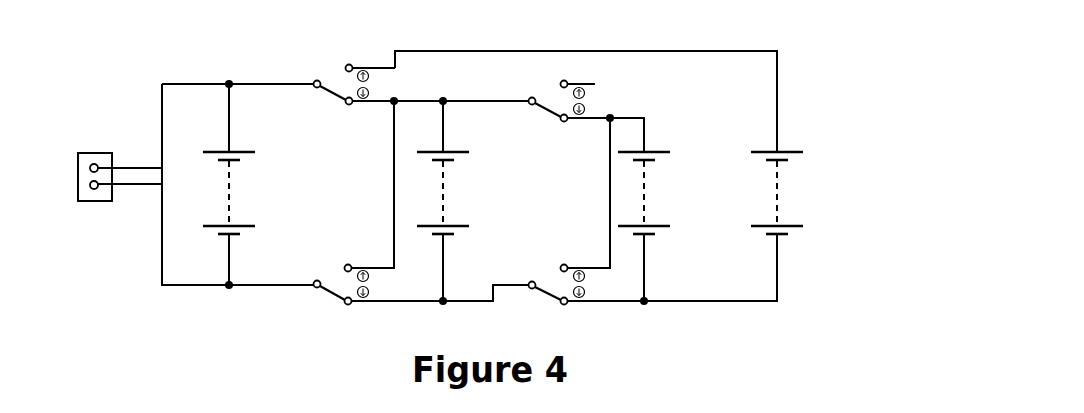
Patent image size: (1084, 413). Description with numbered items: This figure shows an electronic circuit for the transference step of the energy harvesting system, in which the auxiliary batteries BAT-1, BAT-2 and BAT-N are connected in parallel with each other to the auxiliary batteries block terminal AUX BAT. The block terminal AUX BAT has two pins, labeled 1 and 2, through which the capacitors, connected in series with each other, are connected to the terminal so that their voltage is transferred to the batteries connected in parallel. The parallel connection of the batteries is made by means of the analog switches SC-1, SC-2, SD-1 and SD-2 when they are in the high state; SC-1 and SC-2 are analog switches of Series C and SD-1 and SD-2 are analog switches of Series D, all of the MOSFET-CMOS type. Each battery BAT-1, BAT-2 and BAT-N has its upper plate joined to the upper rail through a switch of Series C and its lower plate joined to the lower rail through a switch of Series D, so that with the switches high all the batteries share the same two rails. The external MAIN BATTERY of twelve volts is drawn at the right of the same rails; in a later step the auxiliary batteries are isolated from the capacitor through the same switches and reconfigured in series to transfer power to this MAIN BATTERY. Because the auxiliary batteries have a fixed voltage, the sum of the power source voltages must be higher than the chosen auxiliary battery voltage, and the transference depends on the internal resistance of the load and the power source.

The auxiliary batteries block terminal AUX BAT is at (87, 165).
The auxiliary battery terminal 1 is at (126, 179).
The auxiliary battery terminal 2 is at (126, 162).
The auxiliary battery BAT-1 is at (260, 184).
The auxiliary battery BAT-2 is at (476, 201).
The auxiliary battery BAT-N is at (678, 226).
The external main battery MAIN BATTERY is at (855, 193).
The analog switch of Series C SC-1 is at (340, 74).
The analog switch of Series C SC-2 is at (556, 90).
The analog switch of Series D SD-1 is at (340, 274).
The analog switch of Series D SD-2 is at (556, 274).